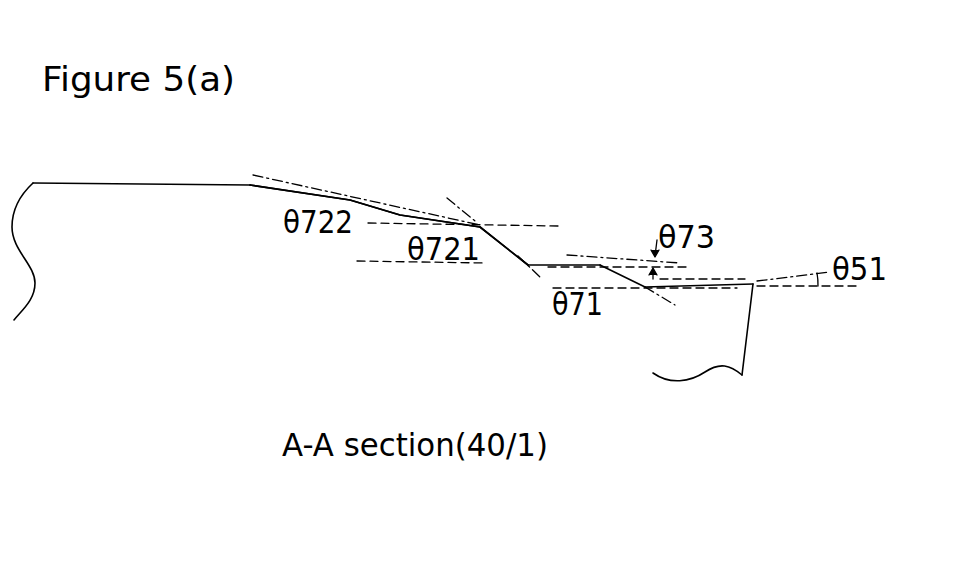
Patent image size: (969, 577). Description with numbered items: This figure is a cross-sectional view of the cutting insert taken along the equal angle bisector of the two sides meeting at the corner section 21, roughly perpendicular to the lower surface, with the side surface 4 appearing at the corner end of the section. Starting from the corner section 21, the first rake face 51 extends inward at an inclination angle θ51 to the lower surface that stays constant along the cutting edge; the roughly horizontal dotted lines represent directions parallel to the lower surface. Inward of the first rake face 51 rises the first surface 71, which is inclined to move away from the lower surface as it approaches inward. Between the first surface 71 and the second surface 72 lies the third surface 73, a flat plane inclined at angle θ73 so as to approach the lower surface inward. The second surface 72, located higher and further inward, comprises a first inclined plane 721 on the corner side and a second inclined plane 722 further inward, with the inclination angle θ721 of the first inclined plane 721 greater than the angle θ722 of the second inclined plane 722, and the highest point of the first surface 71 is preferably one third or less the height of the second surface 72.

The second surface 72 is at (557, 132).
The second inclined plane 722 is at (397, 222).
The first inclined plane 721 is at (485, 260).
The third surface 73 is at (570, 262).
The first surface 71 is at (619, 285).
The first rake face 51 is at (715, 280).
The corner section 21 is at (754, 282).
The side surface 4 is at (756, 326).